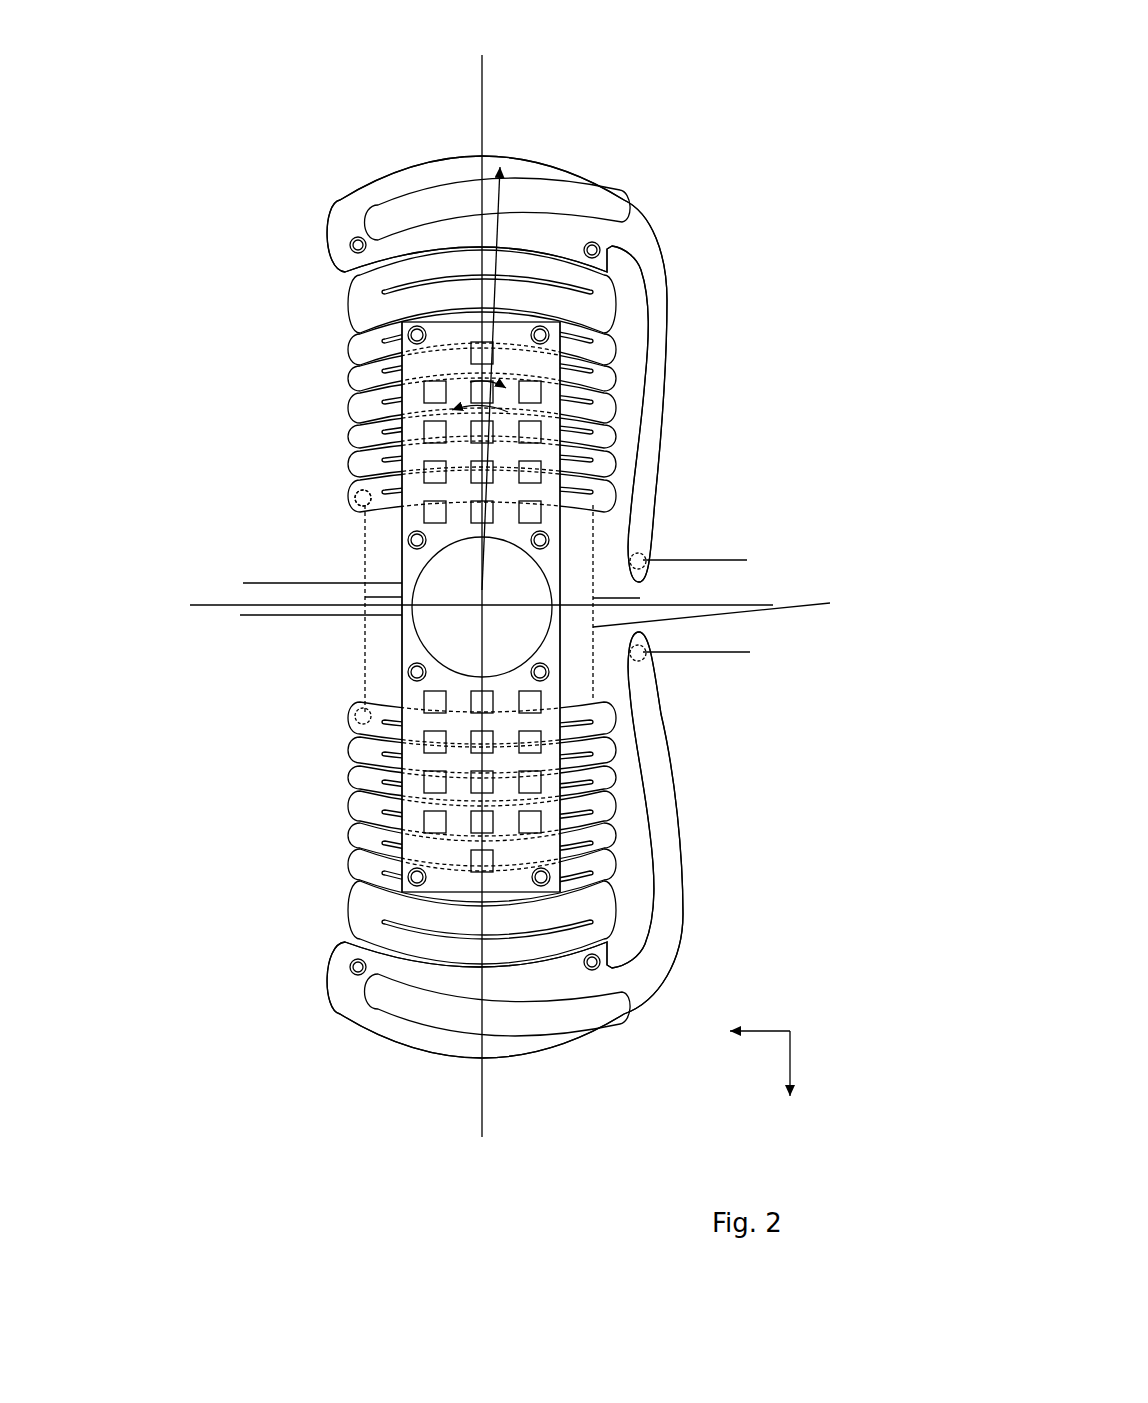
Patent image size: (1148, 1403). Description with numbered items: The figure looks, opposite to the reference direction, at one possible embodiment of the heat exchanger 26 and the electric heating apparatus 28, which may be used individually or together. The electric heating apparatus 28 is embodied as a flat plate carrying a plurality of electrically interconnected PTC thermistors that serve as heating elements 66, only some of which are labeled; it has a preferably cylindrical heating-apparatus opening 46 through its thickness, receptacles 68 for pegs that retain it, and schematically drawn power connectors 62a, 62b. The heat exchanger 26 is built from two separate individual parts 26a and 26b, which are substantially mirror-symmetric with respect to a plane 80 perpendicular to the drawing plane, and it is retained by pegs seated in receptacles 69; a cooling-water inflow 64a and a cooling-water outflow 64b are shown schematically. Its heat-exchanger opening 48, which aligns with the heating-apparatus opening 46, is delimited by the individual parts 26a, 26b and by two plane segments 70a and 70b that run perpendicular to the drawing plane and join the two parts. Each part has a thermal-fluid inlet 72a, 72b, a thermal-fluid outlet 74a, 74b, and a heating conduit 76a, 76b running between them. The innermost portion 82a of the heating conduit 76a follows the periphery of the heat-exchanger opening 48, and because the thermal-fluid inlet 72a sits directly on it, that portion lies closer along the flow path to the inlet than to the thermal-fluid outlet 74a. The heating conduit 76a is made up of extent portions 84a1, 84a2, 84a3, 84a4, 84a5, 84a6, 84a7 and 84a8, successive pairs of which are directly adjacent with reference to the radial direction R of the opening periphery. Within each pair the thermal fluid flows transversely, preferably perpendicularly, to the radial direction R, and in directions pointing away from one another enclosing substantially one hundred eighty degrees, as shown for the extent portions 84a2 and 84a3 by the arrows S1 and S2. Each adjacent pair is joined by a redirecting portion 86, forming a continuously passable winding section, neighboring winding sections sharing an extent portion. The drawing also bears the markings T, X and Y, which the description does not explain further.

The heat exchanger 26 is at (624, 150).
The first individual heat-exchanger part 26a is at (630, 236).
The second individual heat-exchanger part 26b is at (435, 992).
The electric heating apparatus 28 is at (830, 603).
The heating-apparatus opening 46 is at (498, 591).
The heat-exchanger opening 48 is at (388, 630).
The power connector 62a is at (243, 583).
The power connector 62b is at (240, 615).
The cooling-water inflow 64a is at (356, 497).
The cooling-water outflow 64b is at (747, 560).
The heating elements 66 is at (562, 393).
The receptacles 68 is at (405, 334).
The receptacles 69 is at (350, 246).
The plane segment 70a is at (365, 597).
The plane segment 70b is at (600, 598).
The thermal-fluid inlet 72a is at (367, 503).
The thermal-fluid inlet 72b is at (365, 724).
The thermal-fluid outlet 74a is at (645, 558).
The thermal-fluid outlet 74b is at (643, 652).
The heating conduit 76a is at (430, 188).
The heating conduit 76b is at (515, 1050).
The plane 80 is at (190, 605).
The innermost portion 82a is at (360, 494).
The extent portion 84a1 is at (398, 466).
The extent portion 84a2 is at (594, 447).
The extent portion 84a3 is at (402, 404).
The extent portion 84a4 is at (602, 375).
The extent portion 84a5 is at (398, 340).
The extent portion 84a6 is at (552, 297).
The extent portion 84a7 is at (405, 278).
The extent portion 84a8 is at (425, 228).
The redirecting portion 86 is at (394, 321).
The radial direction R is at (504, 378).
The arrow S1 is at (510, 393).
The arrow S2 is at (466, 387).
The axis T is at (488, 72).
The X axis X is at (797, 1079).
The Y axis Y is at (758, 1051).